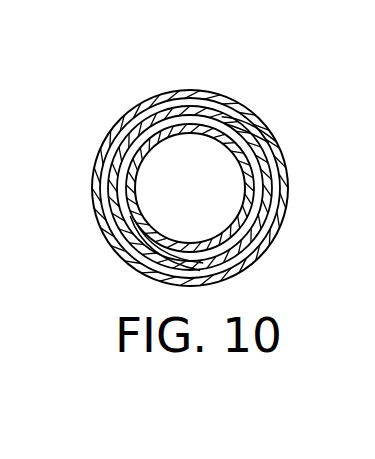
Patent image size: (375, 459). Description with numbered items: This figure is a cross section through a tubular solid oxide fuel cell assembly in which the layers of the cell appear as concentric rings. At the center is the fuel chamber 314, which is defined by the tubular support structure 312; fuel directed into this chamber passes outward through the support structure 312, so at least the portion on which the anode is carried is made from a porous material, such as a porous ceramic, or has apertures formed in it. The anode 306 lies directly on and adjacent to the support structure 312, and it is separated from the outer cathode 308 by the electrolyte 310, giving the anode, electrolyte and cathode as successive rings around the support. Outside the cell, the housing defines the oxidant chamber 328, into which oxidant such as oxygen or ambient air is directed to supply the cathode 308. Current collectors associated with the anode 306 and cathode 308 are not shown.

The anode 306 is at (183, 110).
The cathode 308 is at (138, 108).
The electrolyte 310 is at (160, 103).
The tubular support structure 312 is at (237, 113).
The fuel chamber 314 is at (218, 202).
The oxidant chamber 328 is at (360, 202).